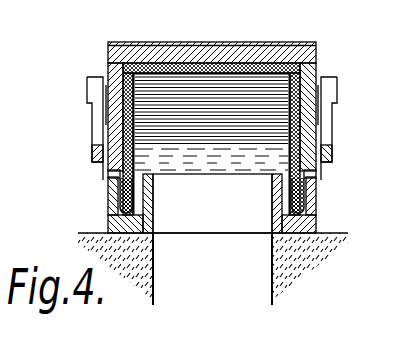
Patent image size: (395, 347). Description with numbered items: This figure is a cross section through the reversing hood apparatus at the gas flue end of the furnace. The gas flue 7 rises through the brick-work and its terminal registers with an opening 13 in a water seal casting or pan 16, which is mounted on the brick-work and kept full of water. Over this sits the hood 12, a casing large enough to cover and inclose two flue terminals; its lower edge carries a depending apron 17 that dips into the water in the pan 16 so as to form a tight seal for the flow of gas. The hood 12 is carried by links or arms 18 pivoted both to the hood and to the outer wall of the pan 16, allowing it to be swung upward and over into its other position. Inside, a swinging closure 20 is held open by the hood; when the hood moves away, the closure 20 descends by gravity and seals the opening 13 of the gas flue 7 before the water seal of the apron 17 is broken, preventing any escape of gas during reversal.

The gas flue 7 is at (212, 269).
The hood 12 is at (225, 48).
The opening 13 is at (152, 173).
The water seal casting or pan 16 is at (318, 214).
The depending apron 17 is at (120, 183).
The links or arms 18 is at (100, 113).
The swinging closure 20 is at (172, 63).